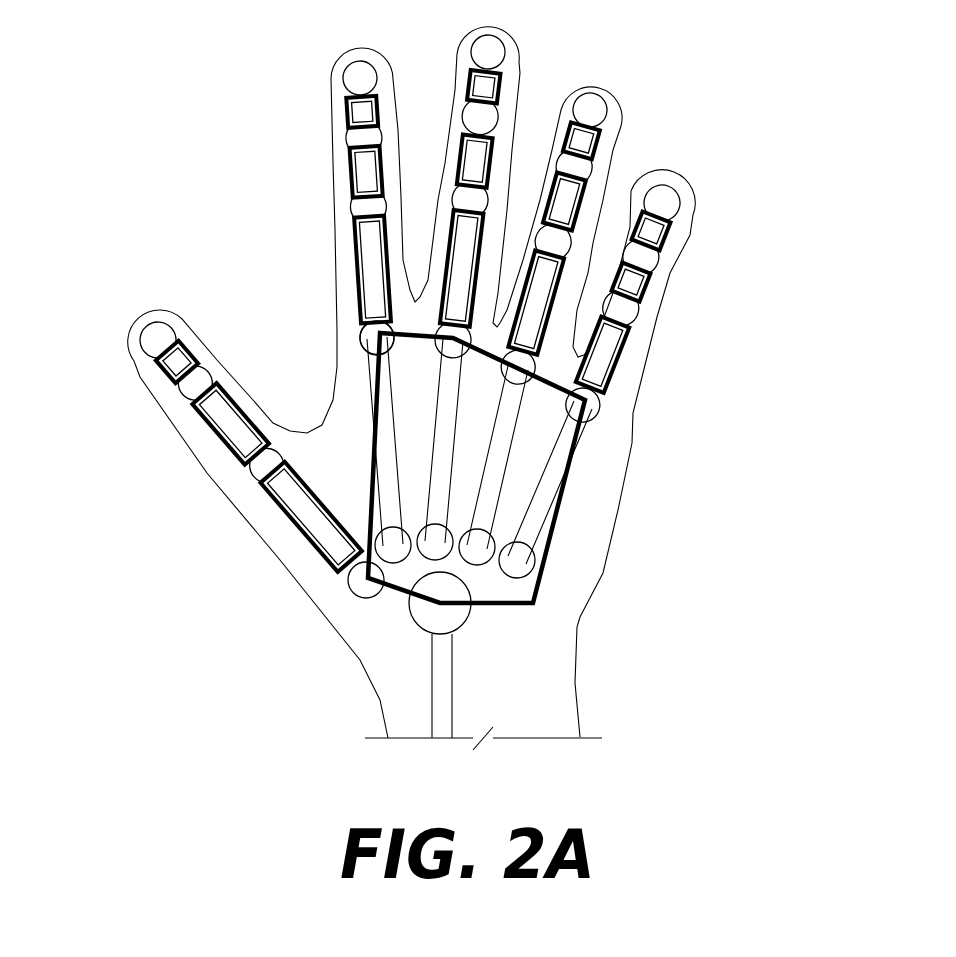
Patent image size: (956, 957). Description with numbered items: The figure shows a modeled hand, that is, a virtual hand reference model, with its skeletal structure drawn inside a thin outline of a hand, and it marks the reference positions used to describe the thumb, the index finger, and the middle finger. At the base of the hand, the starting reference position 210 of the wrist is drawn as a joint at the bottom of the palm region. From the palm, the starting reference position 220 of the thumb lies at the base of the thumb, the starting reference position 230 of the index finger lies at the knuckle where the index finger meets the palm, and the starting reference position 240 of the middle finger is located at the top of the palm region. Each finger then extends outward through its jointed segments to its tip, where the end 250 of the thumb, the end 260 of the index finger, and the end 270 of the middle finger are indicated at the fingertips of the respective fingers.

The starting reference position of the wrist 210 is at (418, 615).
The starting reference position of the thumb 220 is at (354, 591).
The starting reference position of the index finger 230 is at (360, 338).
The starting reference position of the middle finger 240 is at (453, 339).
The end of the thumb 250 is at (142, 340).
The end of the index finger 260 is at (344, 80).
The end of the middle finger 270 is at (504, 58).